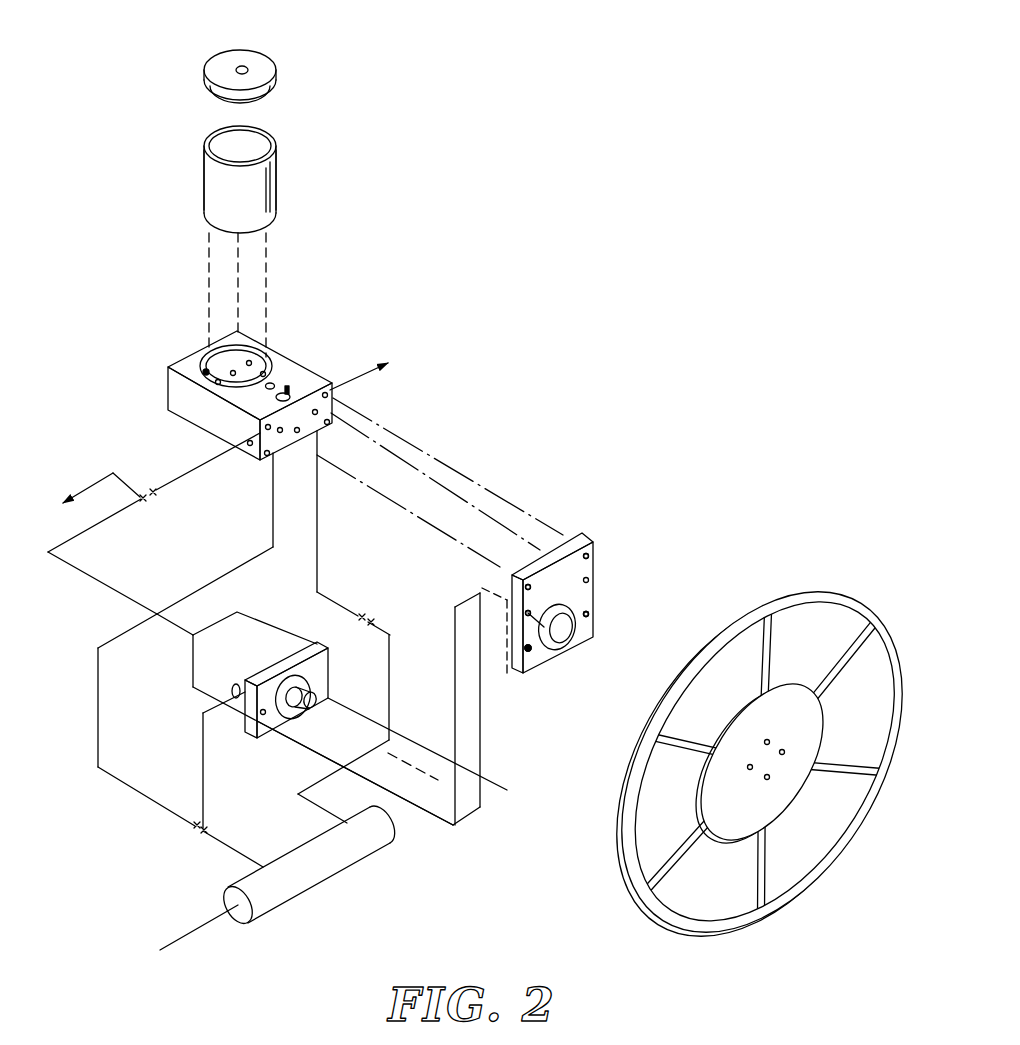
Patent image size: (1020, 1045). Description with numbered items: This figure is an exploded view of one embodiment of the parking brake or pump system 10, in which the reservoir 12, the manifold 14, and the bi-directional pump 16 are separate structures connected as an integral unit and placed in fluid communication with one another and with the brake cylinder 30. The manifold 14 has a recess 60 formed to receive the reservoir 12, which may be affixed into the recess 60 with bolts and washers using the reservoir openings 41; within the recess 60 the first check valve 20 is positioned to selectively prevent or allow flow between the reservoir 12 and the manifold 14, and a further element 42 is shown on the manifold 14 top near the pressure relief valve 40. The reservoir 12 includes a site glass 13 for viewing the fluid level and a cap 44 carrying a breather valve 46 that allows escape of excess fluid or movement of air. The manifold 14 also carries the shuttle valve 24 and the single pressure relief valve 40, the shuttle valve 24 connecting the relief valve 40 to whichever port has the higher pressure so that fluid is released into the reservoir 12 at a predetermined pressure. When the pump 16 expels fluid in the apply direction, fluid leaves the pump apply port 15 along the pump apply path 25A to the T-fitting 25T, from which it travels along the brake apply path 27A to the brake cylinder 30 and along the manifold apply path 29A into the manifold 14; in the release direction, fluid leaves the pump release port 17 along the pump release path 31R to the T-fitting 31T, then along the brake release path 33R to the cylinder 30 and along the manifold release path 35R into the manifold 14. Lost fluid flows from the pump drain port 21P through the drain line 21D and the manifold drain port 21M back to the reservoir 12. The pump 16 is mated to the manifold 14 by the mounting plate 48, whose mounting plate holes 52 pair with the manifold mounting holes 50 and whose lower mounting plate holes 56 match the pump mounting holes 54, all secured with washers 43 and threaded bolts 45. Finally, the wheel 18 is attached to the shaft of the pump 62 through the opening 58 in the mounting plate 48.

The pump system 10 is at (516, 195).
The reservoir 12 is at (255, 183).
The site glass 13 is at (284, 177).
The manifold 14 is at (164, 380).
The pump apply port 15 is at (333, 653).
The pump 16 is at (287, 736).
The pump release port 17 is at (226, 683).
The wheel 18 is at (818, 590).
The first check valve 20 is at (287, 304).
The drain line 21D is at (100, 578).
The manifold drain port 21M is at (232, 375).
The drain port 21P is at (190, 647).
The shuttle valve 24 is at (80, 476).
The pump apply path 25A is at (340, 645).
The T-fitting 25T is at (384, 615).
The brake apply path 27A is at (394, 693).
The manifold apply path 29A is at (320, 548).
The brake cylinder 30 is at (318, 875).
The pump release path 31R is at (204, 735).
The T-fitting 31T is at (188, 836).
The brake release path 33R is at (233, 848).
The manifold release path 35R is at (109, 636).
The pressure relief valve 40 is at (322, 320).
The reservoir openings 41 is at (204, 370).
The pin 42 is at (356, 326).
The washers 43 is at (590, 616).
The cap 44 is at (284, 62).
The threaded bolts 45 is at (590, 556).
The breather valve 46 is at (246, 68).
The mounting plate 48 is at (583, 536).
The manifold mounting holes 50 is at (323, 392).
The mounting plate holes 52 is at (512, 573).
The pump mounting holes 54 is at (264, 715).
The lower mounting plate holes 56 is at (590, 614).
The opening 58 is at (562, 642).
The recess 60 is at (225, 357).
The shaft of the pump 62 is at (321, 679).